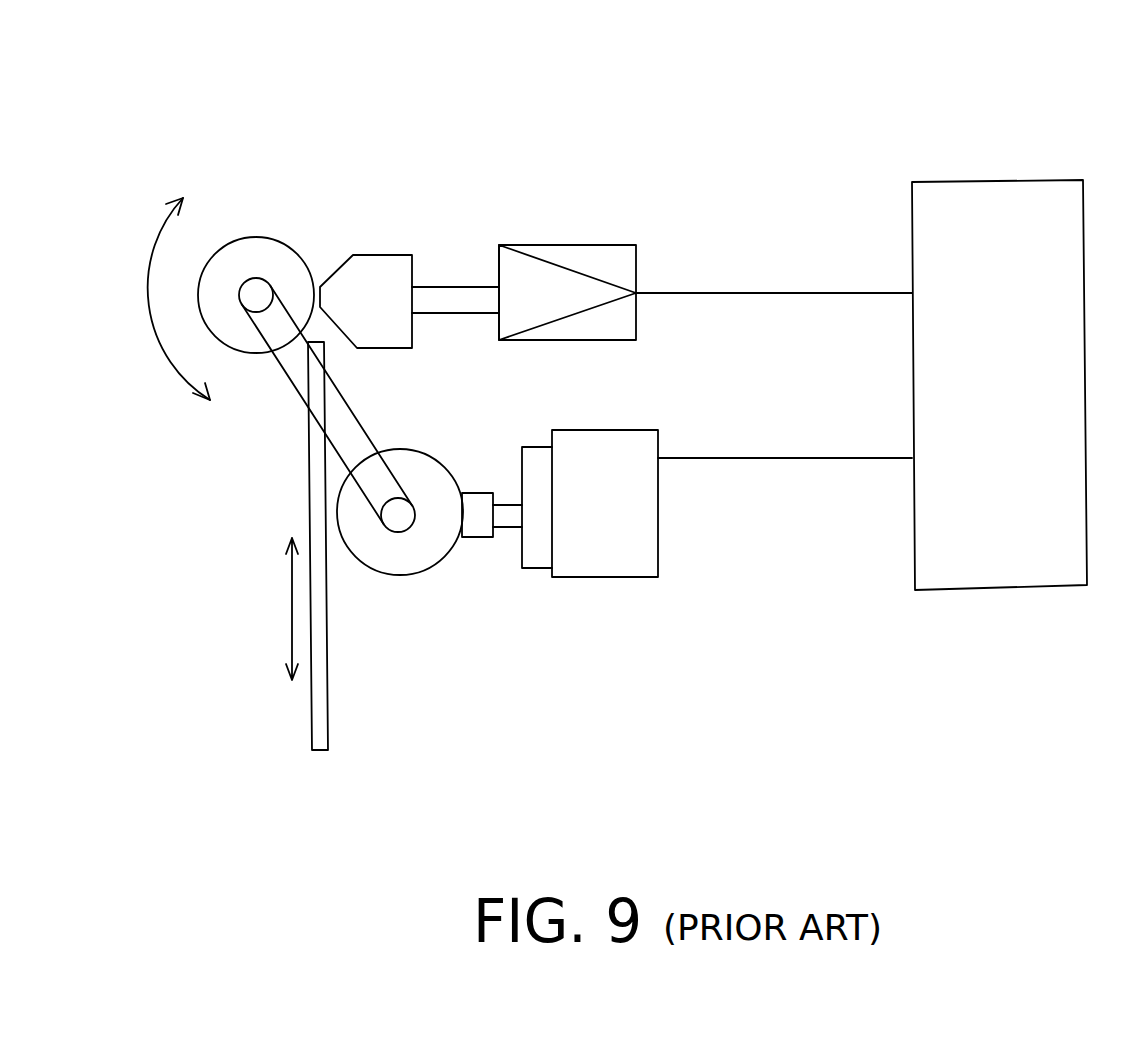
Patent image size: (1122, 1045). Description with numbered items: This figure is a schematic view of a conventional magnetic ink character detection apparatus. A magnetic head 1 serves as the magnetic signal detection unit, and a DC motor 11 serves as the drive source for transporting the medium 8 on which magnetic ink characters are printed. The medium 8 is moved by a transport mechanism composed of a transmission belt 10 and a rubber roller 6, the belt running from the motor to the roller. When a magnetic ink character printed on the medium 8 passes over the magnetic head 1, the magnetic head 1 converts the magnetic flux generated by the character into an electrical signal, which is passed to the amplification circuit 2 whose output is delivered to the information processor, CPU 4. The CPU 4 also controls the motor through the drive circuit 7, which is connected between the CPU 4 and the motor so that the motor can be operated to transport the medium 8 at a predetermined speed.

The magnetic head 1 is at (390, 277).
The amplification circuit 2 is at (597, 245).
The CPU 4 is at (988, 181).
The rubber roller 6 is at (258, 255).
The drive circuit 7 is at (660, 550).
The medium 8 is at (332, 710).
The transmission belt 10 is at (296, 388).
The DC motor 11 is at (420, 462).